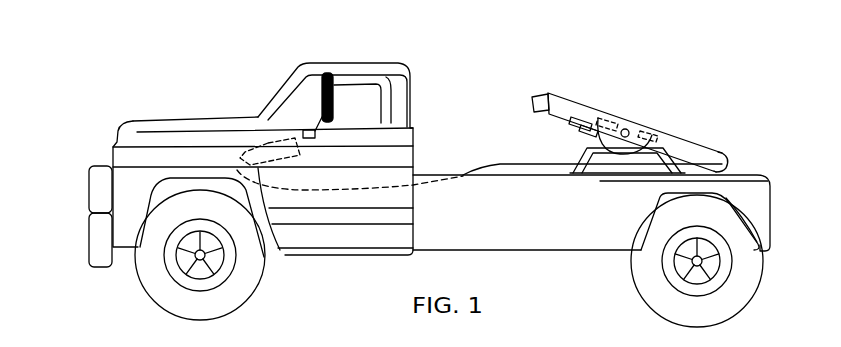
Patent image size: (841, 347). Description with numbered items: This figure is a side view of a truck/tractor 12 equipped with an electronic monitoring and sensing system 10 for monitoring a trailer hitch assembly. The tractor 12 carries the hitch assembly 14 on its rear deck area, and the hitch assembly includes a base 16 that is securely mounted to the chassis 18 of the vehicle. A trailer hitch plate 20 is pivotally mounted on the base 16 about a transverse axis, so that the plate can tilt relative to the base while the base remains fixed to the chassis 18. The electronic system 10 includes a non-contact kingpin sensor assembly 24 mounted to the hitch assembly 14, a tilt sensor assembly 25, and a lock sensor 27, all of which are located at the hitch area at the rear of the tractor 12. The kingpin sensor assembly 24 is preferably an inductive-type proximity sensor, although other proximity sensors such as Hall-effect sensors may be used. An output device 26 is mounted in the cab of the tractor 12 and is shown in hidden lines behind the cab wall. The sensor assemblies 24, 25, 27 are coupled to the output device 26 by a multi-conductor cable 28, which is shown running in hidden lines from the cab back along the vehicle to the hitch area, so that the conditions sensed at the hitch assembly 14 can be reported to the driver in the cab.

The electronic monitoring and sensing system 10 is at (546, 141).
The truck/tractor 12 is at (409, 83).
The hitch assembly 14 is at (746, 88).
The base 16 is at (564, 163).
The chassis 18 is at (770, 250).
The trailer hitch plate 20 is at (558, 88).
The non-contact kingpin sensor assembly 24 is at (654, 118).
The tilt sensor assembly 25 is at (694, 160).
The output device 26 is at (278, 135).
The lock sensor 27 is at (611, 108).
The multi-conductor cable 28 is at (482, 172).